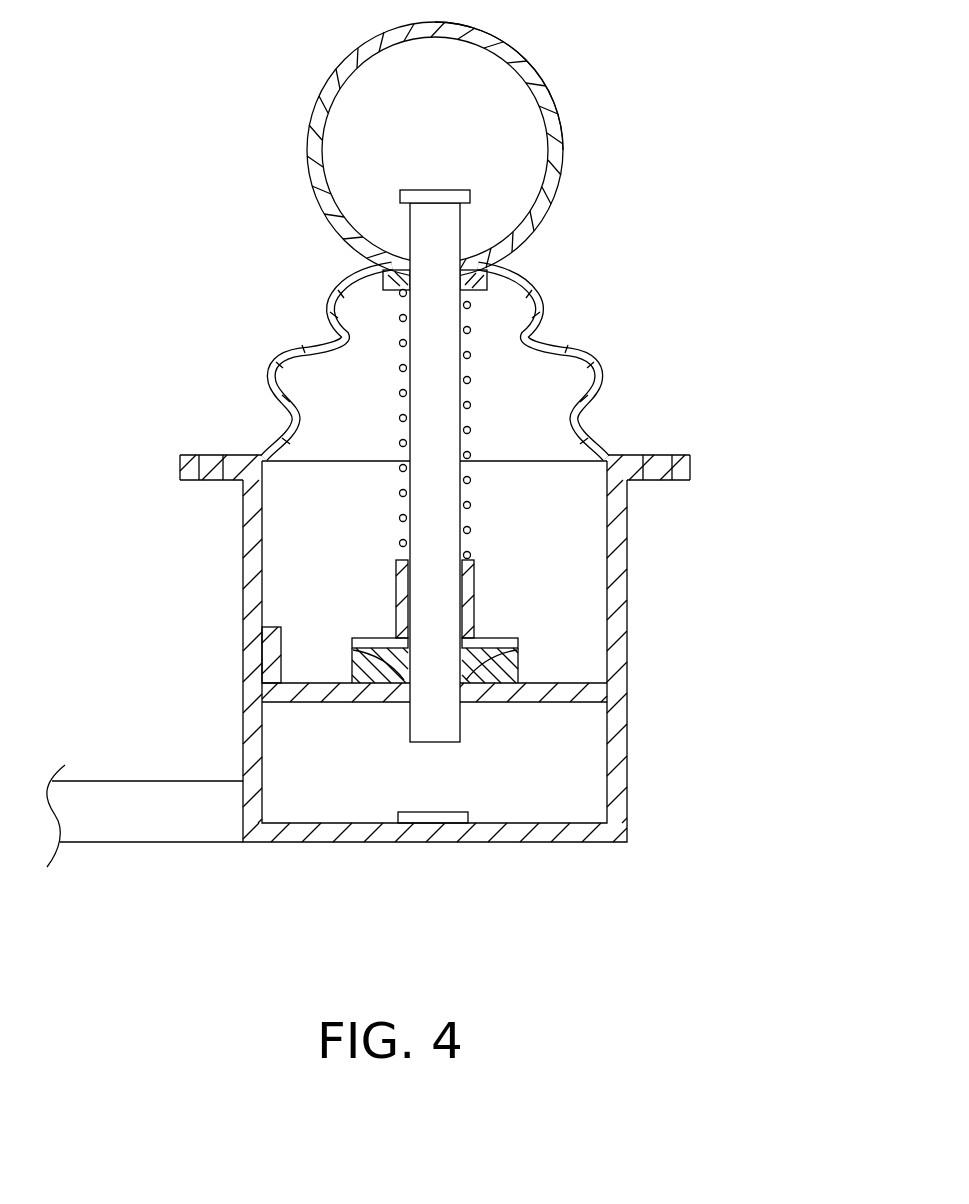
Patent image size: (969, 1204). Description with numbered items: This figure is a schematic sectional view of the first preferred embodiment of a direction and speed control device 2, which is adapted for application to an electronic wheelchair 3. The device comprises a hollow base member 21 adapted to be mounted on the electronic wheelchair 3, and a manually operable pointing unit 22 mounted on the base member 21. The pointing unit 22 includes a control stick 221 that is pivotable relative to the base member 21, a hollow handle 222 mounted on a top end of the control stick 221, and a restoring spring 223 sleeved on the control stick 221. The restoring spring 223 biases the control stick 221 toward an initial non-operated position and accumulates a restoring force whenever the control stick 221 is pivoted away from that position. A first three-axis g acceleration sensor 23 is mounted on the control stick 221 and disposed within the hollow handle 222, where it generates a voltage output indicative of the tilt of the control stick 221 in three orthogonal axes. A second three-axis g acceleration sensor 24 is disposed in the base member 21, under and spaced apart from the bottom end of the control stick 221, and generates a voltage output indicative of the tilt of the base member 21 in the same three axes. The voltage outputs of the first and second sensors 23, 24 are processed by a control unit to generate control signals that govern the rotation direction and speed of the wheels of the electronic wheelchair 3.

The direction and speed control device 2 is at (722, 284).
The hollow base member 21 is at (183, 466).
The manually operable pointing unit 22 is at (272, 98).
The control stick 221 is at (453, 342).
The hollow handle 222 is at (548, 96).
The restoring spring 223 is at (403, 343).
The first three-axis g acceleration sensor 23 is at (465, 194).
The second three-axis g acceleration sensor 24 is at (450, 820).
The electronic wheelchair 3 is at (137, 832).